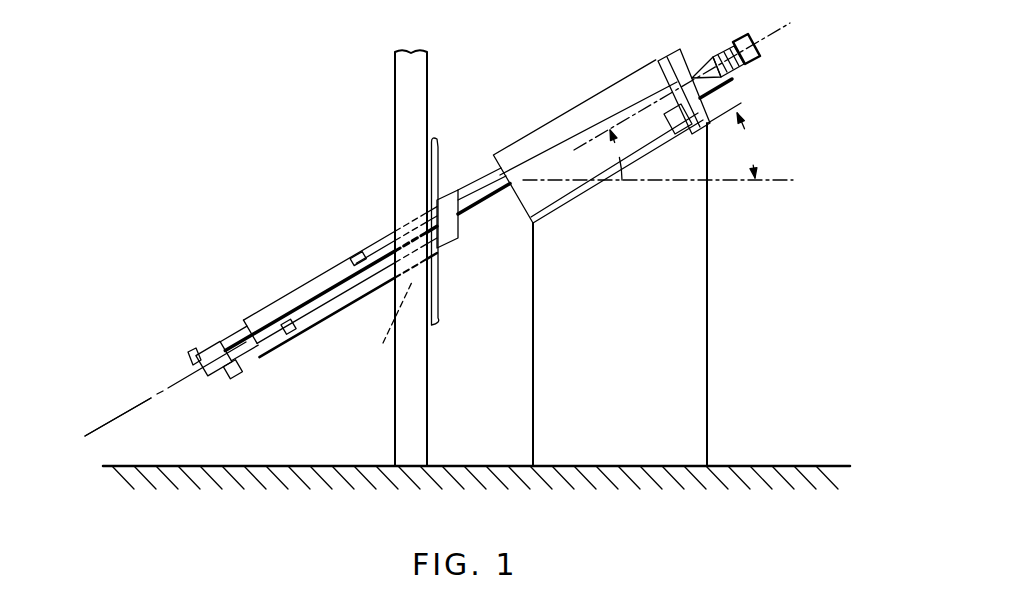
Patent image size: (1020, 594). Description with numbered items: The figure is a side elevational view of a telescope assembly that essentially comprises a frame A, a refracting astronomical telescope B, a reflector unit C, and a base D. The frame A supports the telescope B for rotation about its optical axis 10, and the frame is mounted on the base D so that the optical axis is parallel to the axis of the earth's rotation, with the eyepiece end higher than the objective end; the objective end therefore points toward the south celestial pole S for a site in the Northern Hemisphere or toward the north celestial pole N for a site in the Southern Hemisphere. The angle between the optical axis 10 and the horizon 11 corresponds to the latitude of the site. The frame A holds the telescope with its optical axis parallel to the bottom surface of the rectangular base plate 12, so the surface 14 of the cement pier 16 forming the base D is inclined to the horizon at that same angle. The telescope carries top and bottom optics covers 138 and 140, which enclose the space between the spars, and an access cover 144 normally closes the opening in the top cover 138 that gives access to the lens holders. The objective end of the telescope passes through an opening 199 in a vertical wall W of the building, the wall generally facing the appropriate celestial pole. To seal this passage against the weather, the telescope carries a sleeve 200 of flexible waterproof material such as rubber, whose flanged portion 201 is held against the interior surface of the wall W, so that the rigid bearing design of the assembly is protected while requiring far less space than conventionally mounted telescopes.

The optical axis 10 is at (150, 393).
The horizon 11 is at (791, 182).
The rectangular base plate 12 is at (559, 208).
The surface 14 is at (597, 191).
The cement pier 16 is at (641, 343).
The top optics cover 138 is at (288, 297).
The bottom optics cover 140 is at (318, 318).
The access cover 144 is at (362, 253).
The opening 199 is at (384, 323).
The sleeve 200 is at (448, 193).
The flanged portion 201 is at (427, 188).
The frame A is at (626, 151).
The refracting astronomical telescope B is at (364, 245).
The reflector unit C is at (190, 340).
The base D is at (646, 294).
The north celestial pole N is at (691, 82).
The south celestial pole S is at (153, 396).
The wall W is at (405, 258).